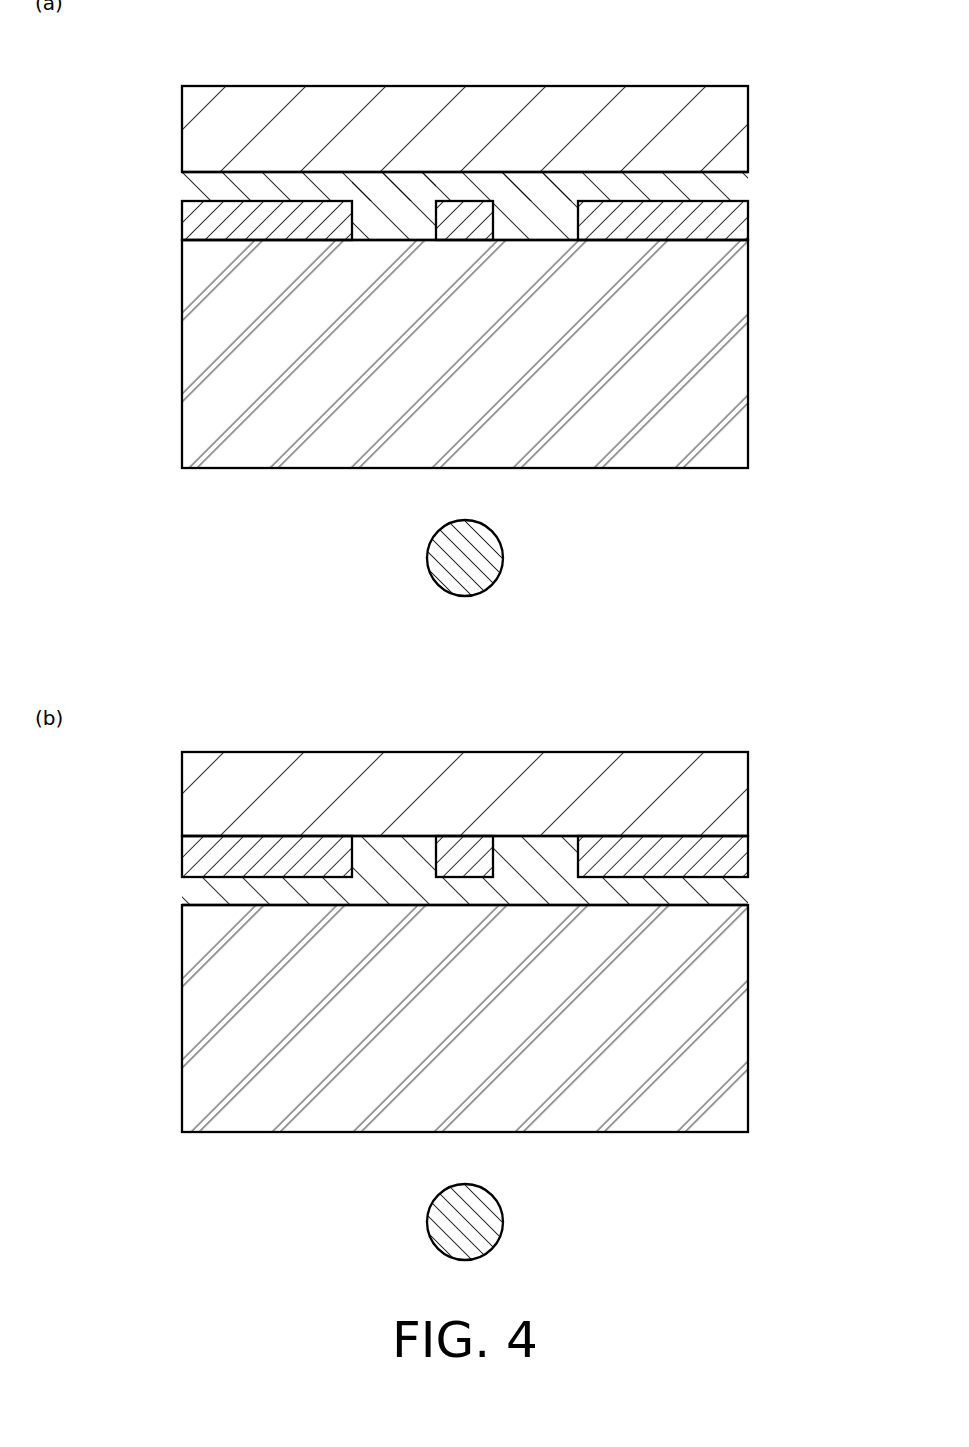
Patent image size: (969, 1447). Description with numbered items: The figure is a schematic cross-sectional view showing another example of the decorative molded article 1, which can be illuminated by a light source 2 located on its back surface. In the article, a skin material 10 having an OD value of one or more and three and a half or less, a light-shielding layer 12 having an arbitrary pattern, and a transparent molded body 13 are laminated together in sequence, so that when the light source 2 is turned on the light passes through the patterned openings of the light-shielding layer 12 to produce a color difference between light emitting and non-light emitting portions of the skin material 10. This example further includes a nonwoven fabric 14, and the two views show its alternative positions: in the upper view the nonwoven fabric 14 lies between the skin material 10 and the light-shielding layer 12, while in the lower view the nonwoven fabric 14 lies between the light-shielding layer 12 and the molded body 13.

The decorative molded article 1 is at (539, 566).
The light source 2 is at (495, 570).
The skin material 10 is at (748, 130).
The light-shielding layer 12 is at (748, 224).
The transparent molded body 13 is at (748, 350).
The nonwoven fabric 14 is at (748, 184).